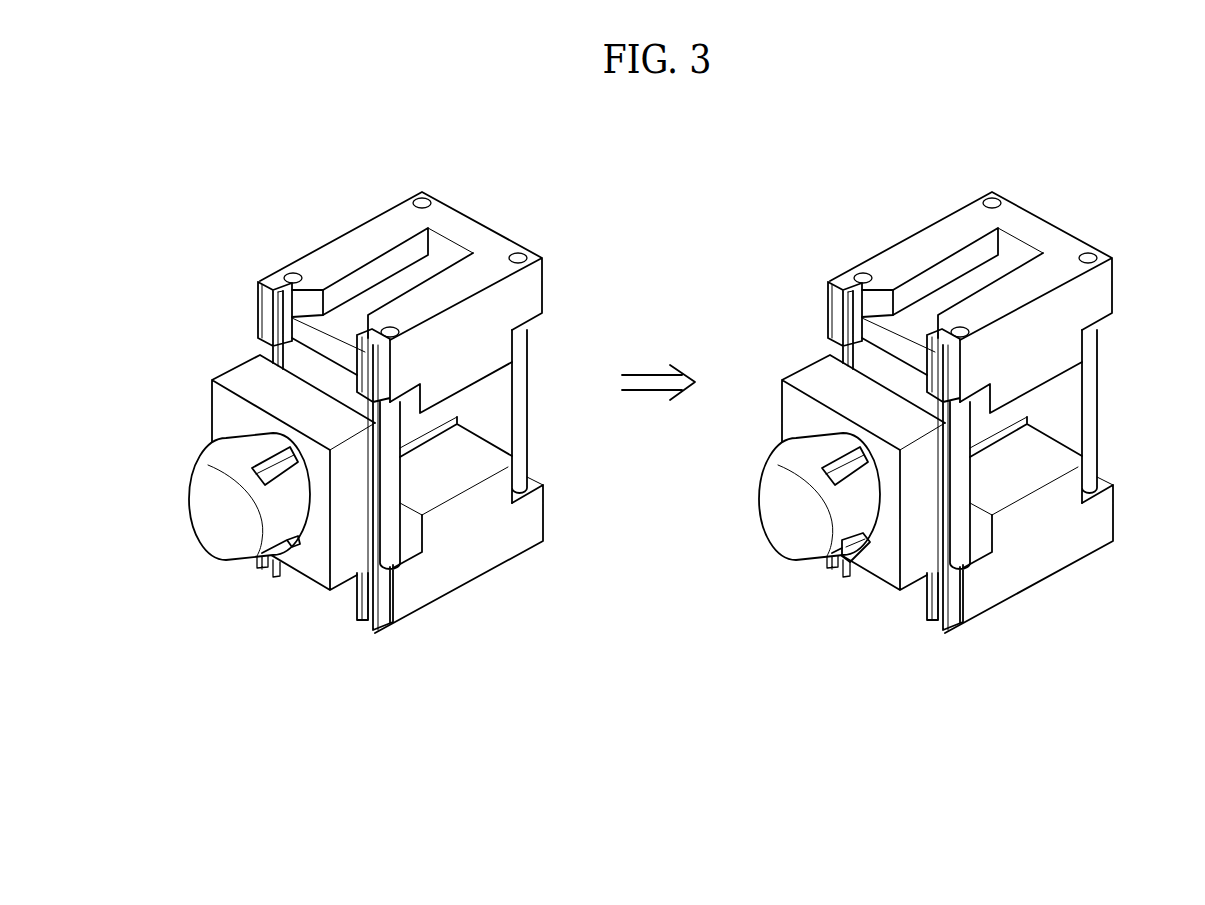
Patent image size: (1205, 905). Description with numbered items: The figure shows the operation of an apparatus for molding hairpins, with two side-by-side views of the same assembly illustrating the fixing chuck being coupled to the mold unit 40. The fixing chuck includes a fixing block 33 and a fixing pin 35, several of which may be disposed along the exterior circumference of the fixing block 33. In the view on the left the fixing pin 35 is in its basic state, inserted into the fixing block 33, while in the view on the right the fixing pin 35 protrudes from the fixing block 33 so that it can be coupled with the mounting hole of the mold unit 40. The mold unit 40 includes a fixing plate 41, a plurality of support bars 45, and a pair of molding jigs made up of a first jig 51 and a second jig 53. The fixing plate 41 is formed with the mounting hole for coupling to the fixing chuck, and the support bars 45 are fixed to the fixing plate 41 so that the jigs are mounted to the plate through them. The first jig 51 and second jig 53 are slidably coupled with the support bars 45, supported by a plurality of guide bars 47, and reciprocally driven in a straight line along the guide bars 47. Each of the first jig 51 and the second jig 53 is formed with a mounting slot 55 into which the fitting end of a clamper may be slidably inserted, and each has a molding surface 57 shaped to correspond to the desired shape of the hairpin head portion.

The fixing block 33 is at (230, 541).
The fixing pin 35 is at (257, 479).
The mold unit 40 is at (297, 230).
The fixing plate 41 is at (318, 572).
The support bar 45 is at (247, 350).
The guide bar 47 is at (520, 433).
The first jig 51 is at (463, 228).
The second jig 53 is at (450, 568).
The mounting slot 55 is at (370, 266).
The molding surface 57 is at (437, 477).